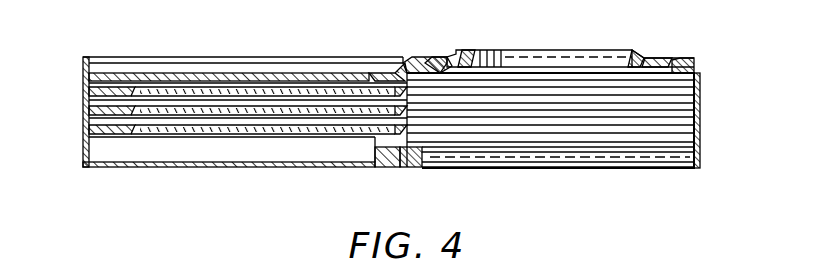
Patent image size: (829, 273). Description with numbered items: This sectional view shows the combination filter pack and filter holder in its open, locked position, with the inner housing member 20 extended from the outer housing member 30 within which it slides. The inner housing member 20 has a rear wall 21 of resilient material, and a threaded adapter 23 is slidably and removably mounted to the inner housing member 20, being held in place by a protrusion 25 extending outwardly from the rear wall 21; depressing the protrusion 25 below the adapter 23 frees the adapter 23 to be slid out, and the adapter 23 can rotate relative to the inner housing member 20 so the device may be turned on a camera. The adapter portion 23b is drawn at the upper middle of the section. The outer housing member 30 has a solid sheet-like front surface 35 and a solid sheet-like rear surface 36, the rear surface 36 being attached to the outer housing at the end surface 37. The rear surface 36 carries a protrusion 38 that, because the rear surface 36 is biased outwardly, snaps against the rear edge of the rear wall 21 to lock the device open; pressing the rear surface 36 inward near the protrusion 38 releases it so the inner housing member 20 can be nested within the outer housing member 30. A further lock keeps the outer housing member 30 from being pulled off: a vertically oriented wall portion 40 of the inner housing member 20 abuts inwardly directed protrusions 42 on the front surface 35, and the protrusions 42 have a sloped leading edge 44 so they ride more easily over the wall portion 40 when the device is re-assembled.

The inner housing member 20 is at (708, 110).
The rear wall 21 is at (433, 62).
The threaded adapter 23 is at (651, 58).
The raised member portion 23b is at (460, 50).
The protrusion 25 is at (414, 66).
The outer housing member 30 is at (108, 52).
The front surface 35 is at (132, 171).
The rear surface 36 is at (152, 77).
The end surface 37 is at (86, 113).
The protrusion 38 is at (374, 70).
The wall portion 40 is at (387, 172).
The protrusions 42 is at (403, 172).
The sloped leading edge 44 is at (428, 168).